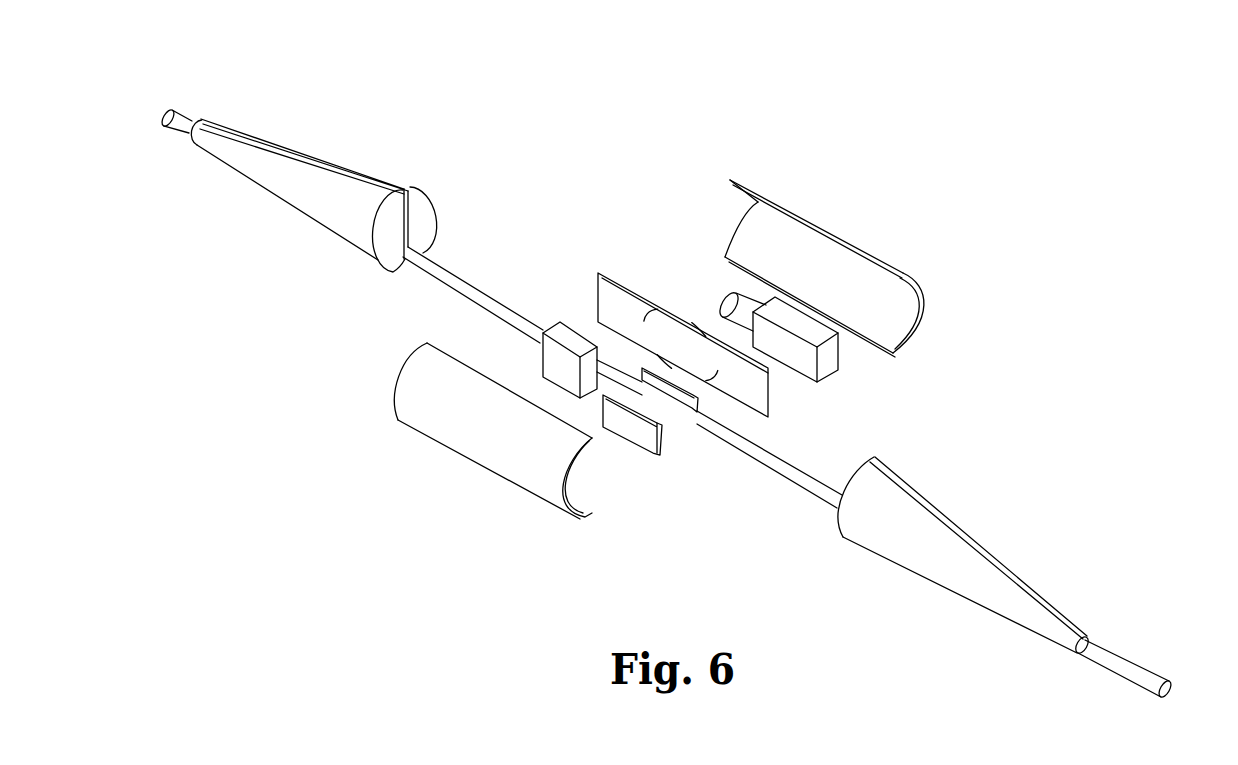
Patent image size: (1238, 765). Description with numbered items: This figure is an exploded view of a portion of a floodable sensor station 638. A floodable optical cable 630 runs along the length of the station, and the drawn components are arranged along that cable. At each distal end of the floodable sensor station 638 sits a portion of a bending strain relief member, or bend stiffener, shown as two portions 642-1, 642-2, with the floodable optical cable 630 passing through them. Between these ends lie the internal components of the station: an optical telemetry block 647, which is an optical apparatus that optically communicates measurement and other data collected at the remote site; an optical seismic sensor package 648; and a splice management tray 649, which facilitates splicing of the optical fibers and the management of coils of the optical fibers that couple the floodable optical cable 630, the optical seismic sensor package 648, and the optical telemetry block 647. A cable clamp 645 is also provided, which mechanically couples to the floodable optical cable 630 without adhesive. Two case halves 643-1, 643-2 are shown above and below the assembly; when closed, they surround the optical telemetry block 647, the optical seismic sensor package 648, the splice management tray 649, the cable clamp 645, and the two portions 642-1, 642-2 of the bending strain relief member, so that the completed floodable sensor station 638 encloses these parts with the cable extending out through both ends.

The floodable optical cable 630 is at (175, 108).
The floodable sensor station 638 is at (487, 87).
The first portion of bending strain relief member 642-1 is at (378, 170).
The second portion of bending strain relief member 642-2 is at (981, 528).
The first case half 643-1 is at (502, 465).
The second case half 643-2 is at (817, 211).
The cable clamp 645 is at (659, 432).
The optical telemetry block 647 is at (543, 360).
The optical seismic sensor package 648 is at (827, 353).
The splice management tray 649 is at (668, 316).